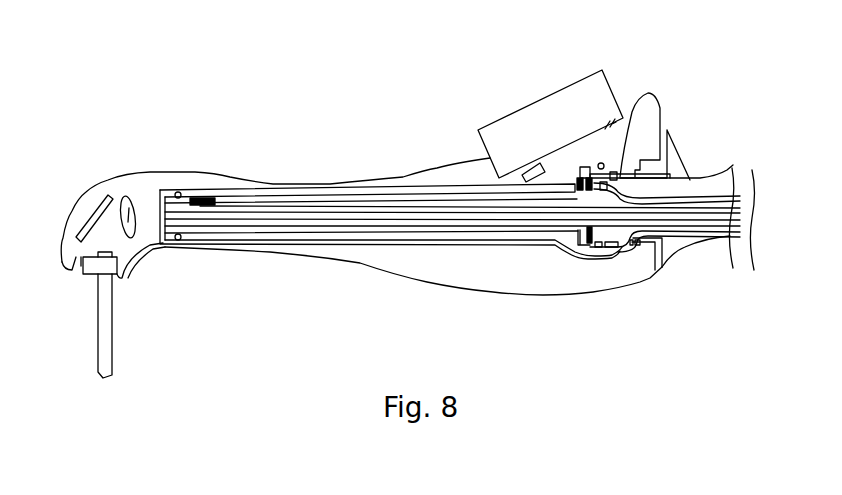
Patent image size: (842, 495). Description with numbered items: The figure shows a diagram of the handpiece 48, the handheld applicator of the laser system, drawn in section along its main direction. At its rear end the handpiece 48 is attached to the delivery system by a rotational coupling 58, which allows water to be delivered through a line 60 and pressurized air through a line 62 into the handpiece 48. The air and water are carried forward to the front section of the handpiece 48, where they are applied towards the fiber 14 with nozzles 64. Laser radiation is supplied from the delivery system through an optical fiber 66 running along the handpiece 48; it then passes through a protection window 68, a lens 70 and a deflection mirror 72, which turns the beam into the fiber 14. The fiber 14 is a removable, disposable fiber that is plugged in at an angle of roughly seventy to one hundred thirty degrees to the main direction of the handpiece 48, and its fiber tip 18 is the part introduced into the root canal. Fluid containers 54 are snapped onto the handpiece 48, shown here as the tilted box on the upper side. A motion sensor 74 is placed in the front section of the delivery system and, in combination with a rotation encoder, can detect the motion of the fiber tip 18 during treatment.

The fiber 14 is at (112, 337).
The fiber tip 18 is at (104, 375).
The handpiece 48 is at (545, 350).
The fluid containers 54 is at (498, 120).
The rotational coupling 58 is at (627, 157).
The line 60 is at (688, 185).
The line 62 is at (688, 185).
The nozzles 64 is at (122, 280).
The optical fiber 66 is at (245, 213).
The protection window 68 is at (160, 243).
The lens 70 is at (127, 196).
The deflection mirror 72 is at (85, 232).
The motion sensor 74 is at (194, 197).